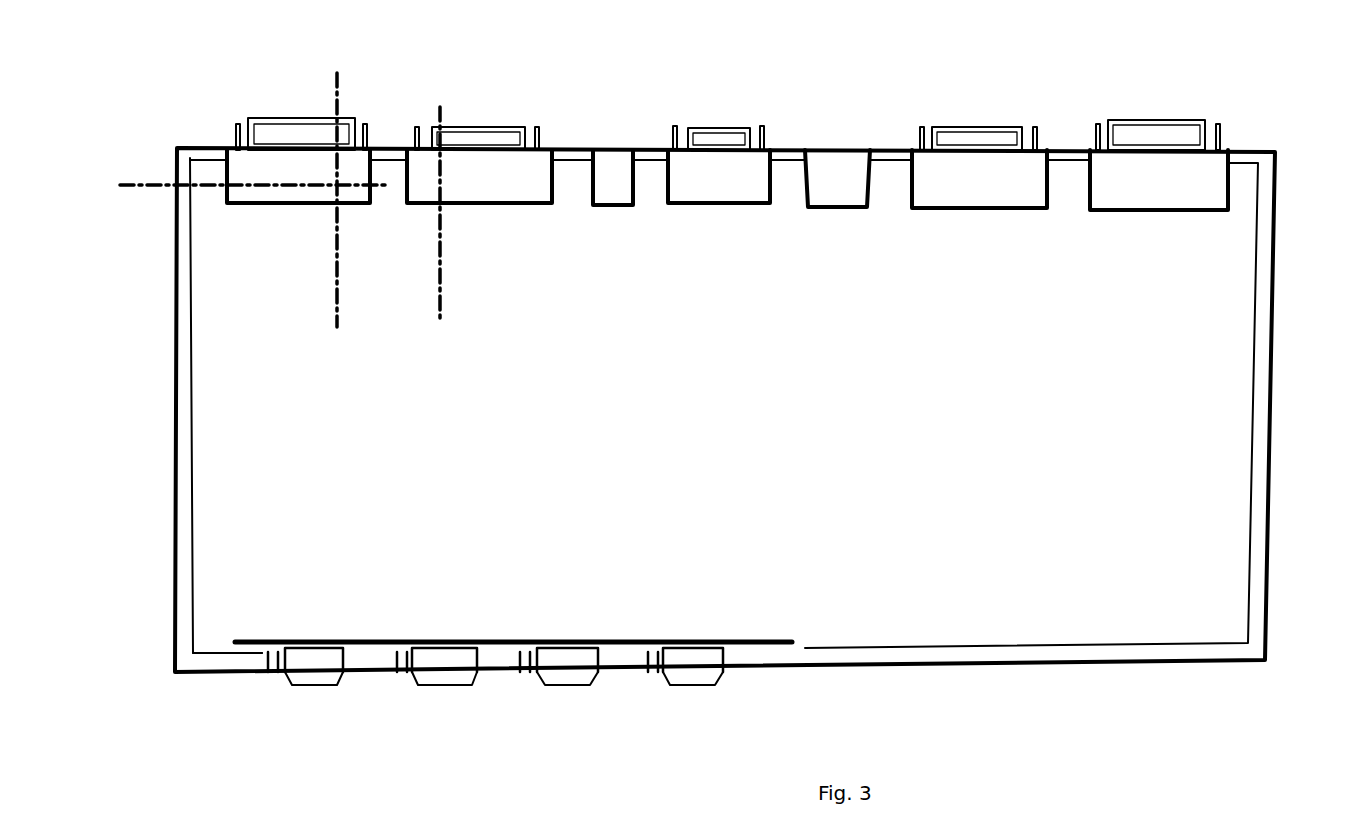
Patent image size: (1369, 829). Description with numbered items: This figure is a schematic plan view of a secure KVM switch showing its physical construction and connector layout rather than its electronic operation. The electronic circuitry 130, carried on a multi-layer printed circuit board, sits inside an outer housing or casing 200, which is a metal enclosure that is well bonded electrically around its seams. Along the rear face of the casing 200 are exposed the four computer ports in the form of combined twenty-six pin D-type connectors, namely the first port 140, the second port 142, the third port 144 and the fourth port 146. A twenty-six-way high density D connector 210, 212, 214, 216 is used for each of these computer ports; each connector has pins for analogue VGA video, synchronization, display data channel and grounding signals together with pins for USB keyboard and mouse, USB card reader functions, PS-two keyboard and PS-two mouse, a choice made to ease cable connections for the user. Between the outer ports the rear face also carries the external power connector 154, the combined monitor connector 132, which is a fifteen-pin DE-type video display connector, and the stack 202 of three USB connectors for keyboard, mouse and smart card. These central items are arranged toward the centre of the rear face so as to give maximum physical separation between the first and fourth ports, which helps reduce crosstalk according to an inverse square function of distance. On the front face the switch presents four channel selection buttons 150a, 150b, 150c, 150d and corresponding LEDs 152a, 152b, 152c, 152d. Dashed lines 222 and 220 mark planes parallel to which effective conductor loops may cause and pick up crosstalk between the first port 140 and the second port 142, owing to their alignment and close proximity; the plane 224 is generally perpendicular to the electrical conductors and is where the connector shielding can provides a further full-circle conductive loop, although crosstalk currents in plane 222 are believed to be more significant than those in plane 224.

The outer housing 200 is at (1282, 213).
The electronic circuitry 130 is at (787, 447).
The combined monitor connector 132 is at (742, 205).
The first computer port 140 is at (293, 205).
The second computer port 142 is at (430, 205).
The third computer port 144 is at (1012, 210).
The fourth computer port 146 is at (1185, 212).
The external power connector 154 is at (613, 165).
The stack of USB connectors 202 is at (860, 210).
The 26-way high density D connector 210 is at (290, 118).
The 26-way high density D connector 212 is at (478, 127).
The 26-way high density D connector 214 is at (972, 127).
The 26-way high density D connector 216 is at (1158, 120).
The dashed line 220 is at (443, 105).
The dashed line 222 is at (340, 72).
The plane 224 is at (130, 180).
The channel selection button 150a is at (322, 685).
The channel selection button 150b is at (460, 686).
The channel selection button 150c is at (562, 685).
The channel selection button 150d is at (697, 685).
The LED 152a is at (270, 678).
The LED 152b is at (400, 680).
The LED 152c is at (525, 680).
The LED 152d is at (655, 680).